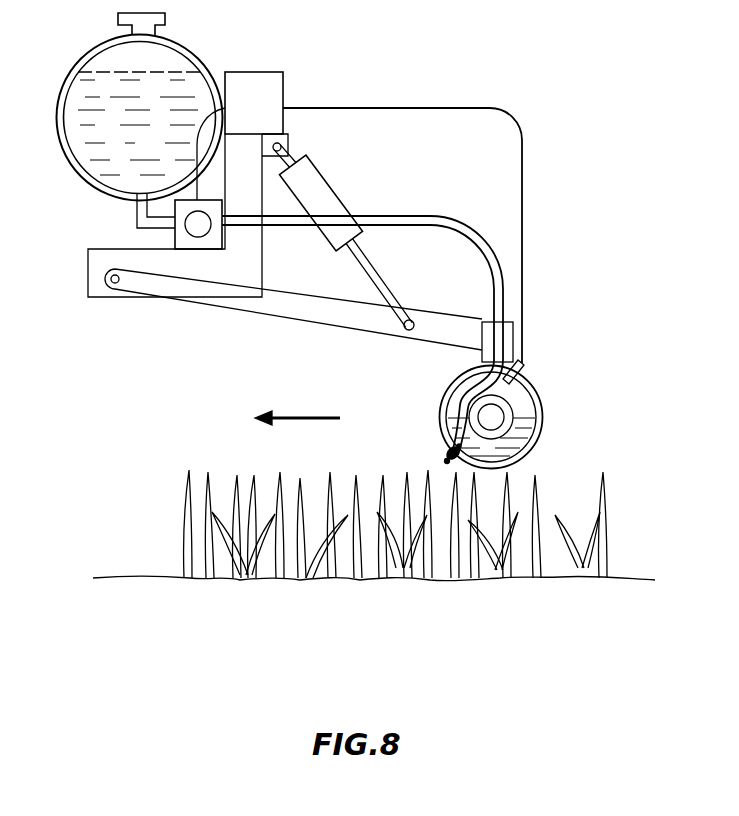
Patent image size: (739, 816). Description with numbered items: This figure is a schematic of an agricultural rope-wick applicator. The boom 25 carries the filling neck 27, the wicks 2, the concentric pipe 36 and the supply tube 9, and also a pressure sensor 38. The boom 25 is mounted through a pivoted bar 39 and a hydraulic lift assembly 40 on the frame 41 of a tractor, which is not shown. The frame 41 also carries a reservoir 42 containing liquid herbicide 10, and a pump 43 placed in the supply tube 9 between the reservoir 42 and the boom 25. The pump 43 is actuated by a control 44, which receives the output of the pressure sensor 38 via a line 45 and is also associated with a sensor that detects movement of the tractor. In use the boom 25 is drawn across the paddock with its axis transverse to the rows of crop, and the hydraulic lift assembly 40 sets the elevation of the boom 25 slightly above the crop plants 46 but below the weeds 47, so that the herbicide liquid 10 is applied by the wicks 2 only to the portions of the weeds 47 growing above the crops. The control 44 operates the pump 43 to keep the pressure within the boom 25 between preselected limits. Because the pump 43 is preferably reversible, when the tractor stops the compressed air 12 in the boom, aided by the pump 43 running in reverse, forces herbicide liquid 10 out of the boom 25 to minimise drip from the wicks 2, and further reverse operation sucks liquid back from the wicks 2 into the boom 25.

The wicks 2 is at (445, 460).
The supply tube 9 is at (498, 338).
The liquid herbicide 10 is at (95, 147).
The compressed air 12 is at (455, 398).
The boom 25 is at (540, 435).
The filling neck 27 is at (477, 366).
The concentric pipe 36 is at (512, 407).
The pressure sensor 38 is at (522, 366).
The pivoted bar 39 is at (313, 308).
The hydraulic lift assembly 40 is at (358, 170).
The frame 41 is at (242, 263).
The reservoir 42 is at (190, 50).
The pump 43 is at (175, 245).
The control 44 is at (283, 82).
The line 45 is at (520, 130).
The crop plants 46 is at (592, 545).
The weeds 47 is at (178, 505).